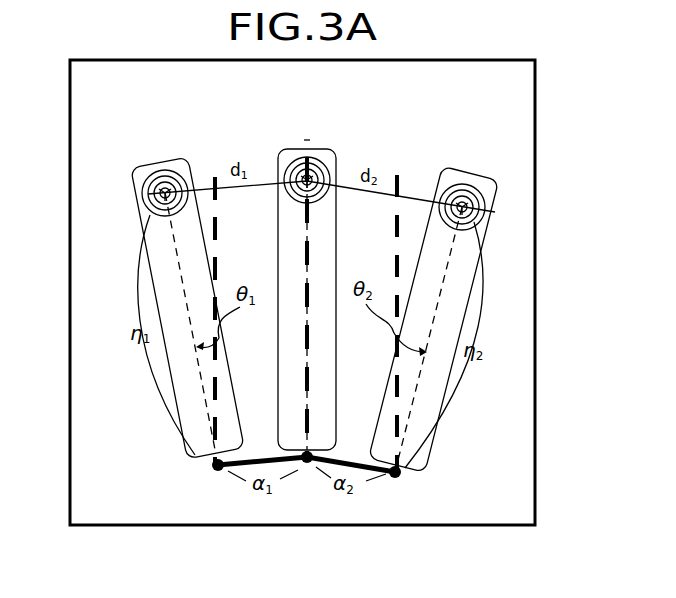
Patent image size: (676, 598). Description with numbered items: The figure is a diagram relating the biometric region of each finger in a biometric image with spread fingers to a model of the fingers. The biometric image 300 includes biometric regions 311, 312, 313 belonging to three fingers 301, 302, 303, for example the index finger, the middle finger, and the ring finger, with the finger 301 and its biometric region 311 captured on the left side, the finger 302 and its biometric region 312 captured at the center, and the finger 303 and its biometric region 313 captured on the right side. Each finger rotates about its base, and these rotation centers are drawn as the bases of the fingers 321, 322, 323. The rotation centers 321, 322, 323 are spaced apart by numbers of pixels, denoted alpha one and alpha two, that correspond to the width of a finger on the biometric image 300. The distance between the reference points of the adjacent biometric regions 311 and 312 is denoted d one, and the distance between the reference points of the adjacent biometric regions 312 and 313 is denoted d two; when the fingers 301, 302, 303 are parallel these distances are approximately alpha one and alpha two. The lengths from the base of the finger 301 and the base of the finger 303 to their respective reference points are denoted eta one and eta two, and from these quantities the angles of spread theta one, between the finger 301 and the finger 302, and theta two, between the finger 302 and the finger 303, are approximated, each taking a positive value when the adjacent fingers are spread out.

The biometric image 300 is at (557, 485).
The finger 301 is at (212, 467).
The finger 302 is at (280, 397).
The finger 303 is at (418, 468).
The biometric region 311 is at (140, 166).
The biometric region 312 is at (322, 156).
The biometric region 313 is at (490, 186).
The base of the finger 321 is at (220, 470).
The base of the finger 322 is at (307, 462).
The base of the finger 323 is at (398, 478).